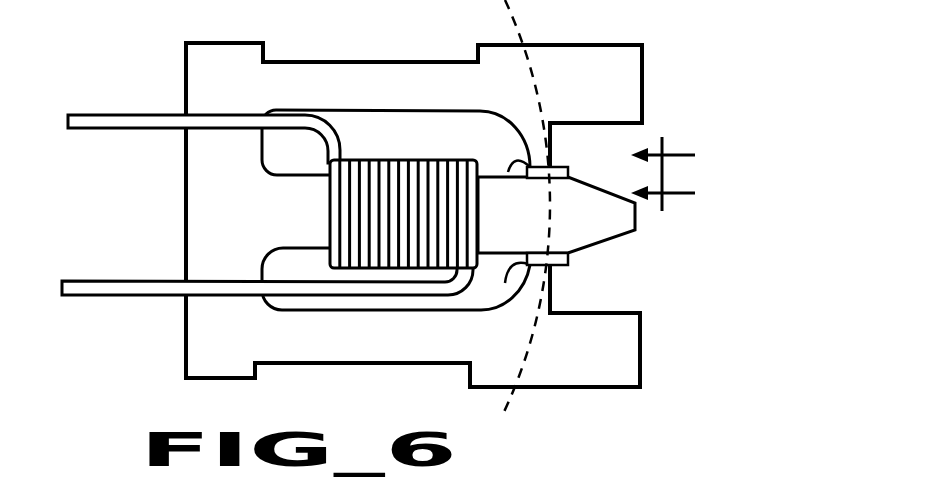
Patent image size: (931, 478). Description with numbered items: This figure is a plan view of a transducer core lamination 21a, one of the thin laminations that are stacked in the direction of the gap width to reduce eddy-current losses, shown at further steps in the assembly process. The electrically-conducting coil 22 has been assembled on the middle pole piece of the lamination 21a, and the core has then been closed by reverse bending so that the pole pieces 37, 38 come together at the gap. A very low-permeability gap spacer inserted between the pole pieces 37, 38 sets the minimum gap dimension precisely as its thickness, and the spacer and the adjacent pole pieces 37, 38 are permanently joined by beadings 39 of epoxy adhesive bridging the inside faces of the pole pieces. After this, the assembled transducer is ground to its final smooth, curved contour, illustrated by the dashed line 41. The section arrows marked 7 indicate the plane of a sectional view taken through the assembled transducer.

The thin laminations 21a is at (267, 229).
The electrically-conducting coil 22 is at (389, 152).
The pole piece 37 is at (538, 146).
The pole piece 38 is at (533, 226).
The beadings of epoxy adhesive 39 is at (508, 170).
The dashed line 41 is at (518, 38).
The section arrows (FIG. 7) 7 is at (663, 177).